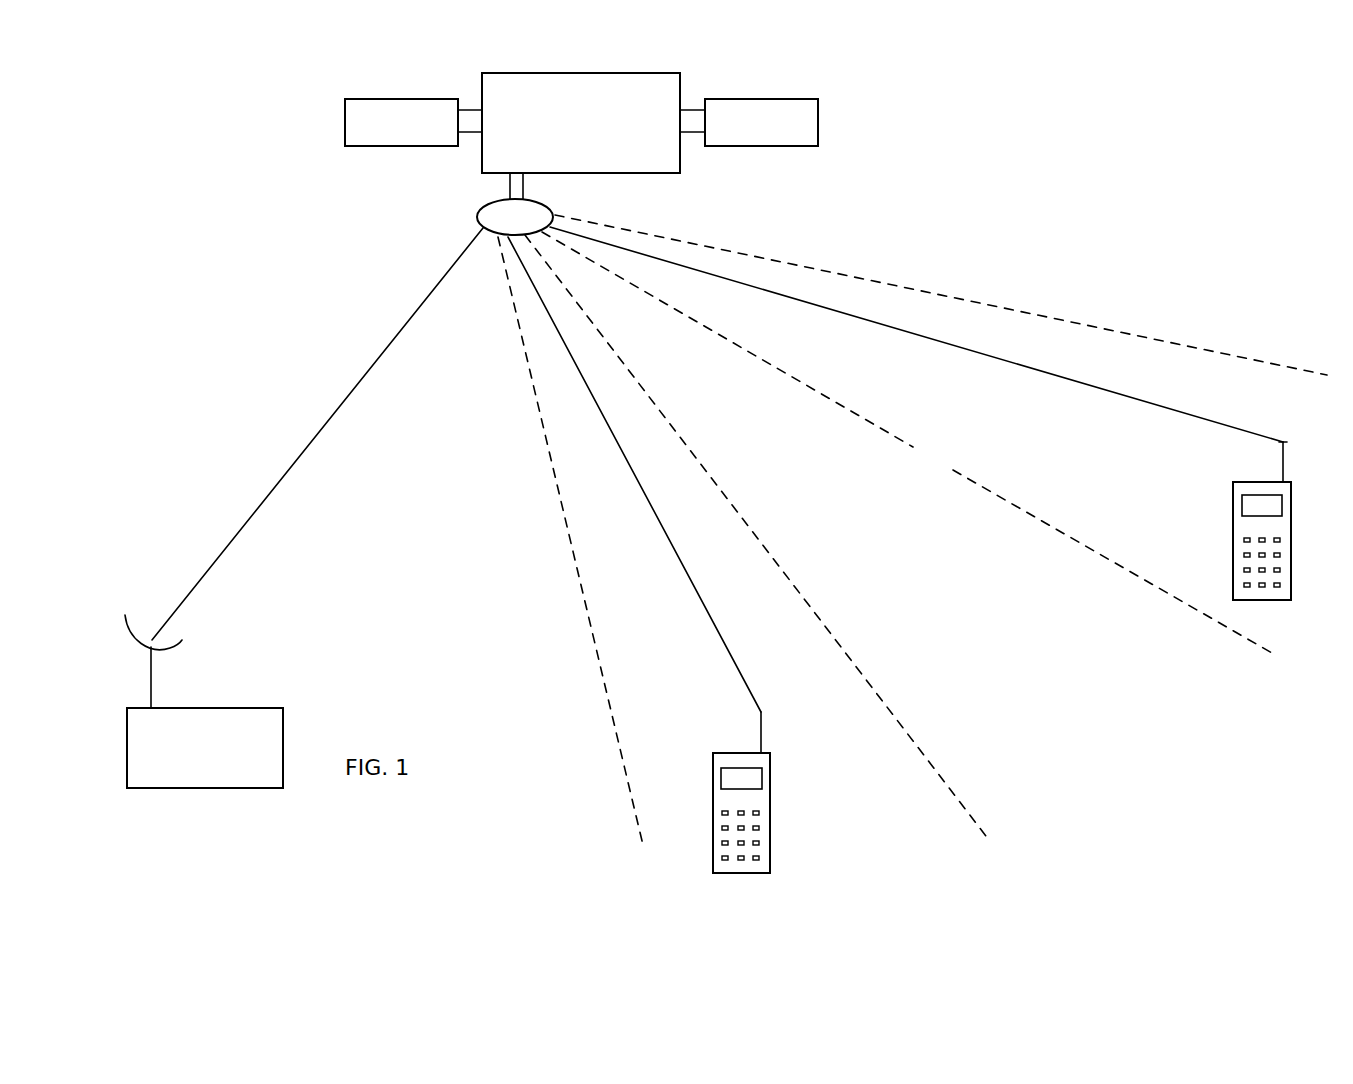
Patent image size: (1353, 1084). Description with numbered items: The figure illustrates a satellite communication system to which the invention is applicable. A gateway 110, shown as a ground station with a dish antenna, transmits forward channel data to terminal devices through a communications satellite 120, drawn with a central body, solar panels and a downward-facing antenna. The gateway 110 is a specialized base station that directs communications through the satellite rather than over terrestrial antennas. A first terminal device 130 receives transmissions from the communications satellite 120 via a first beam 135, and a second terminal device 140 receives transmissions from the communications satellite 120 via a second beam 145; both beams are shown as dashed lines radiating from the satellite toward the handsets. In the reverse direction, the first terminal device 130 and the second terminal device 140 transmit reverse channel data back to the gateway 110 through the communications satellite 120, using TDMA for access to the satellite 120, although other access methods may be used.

The gateway 110 is at (229, 788).
The communications satellite 120 is at (810, 113).
The first terminal device 130 is at (767, 873).
The first beam 135 is at (643, 675).
The second terminal device 140 is at (1288, 600).
The second beam 145 is at (995, 468).